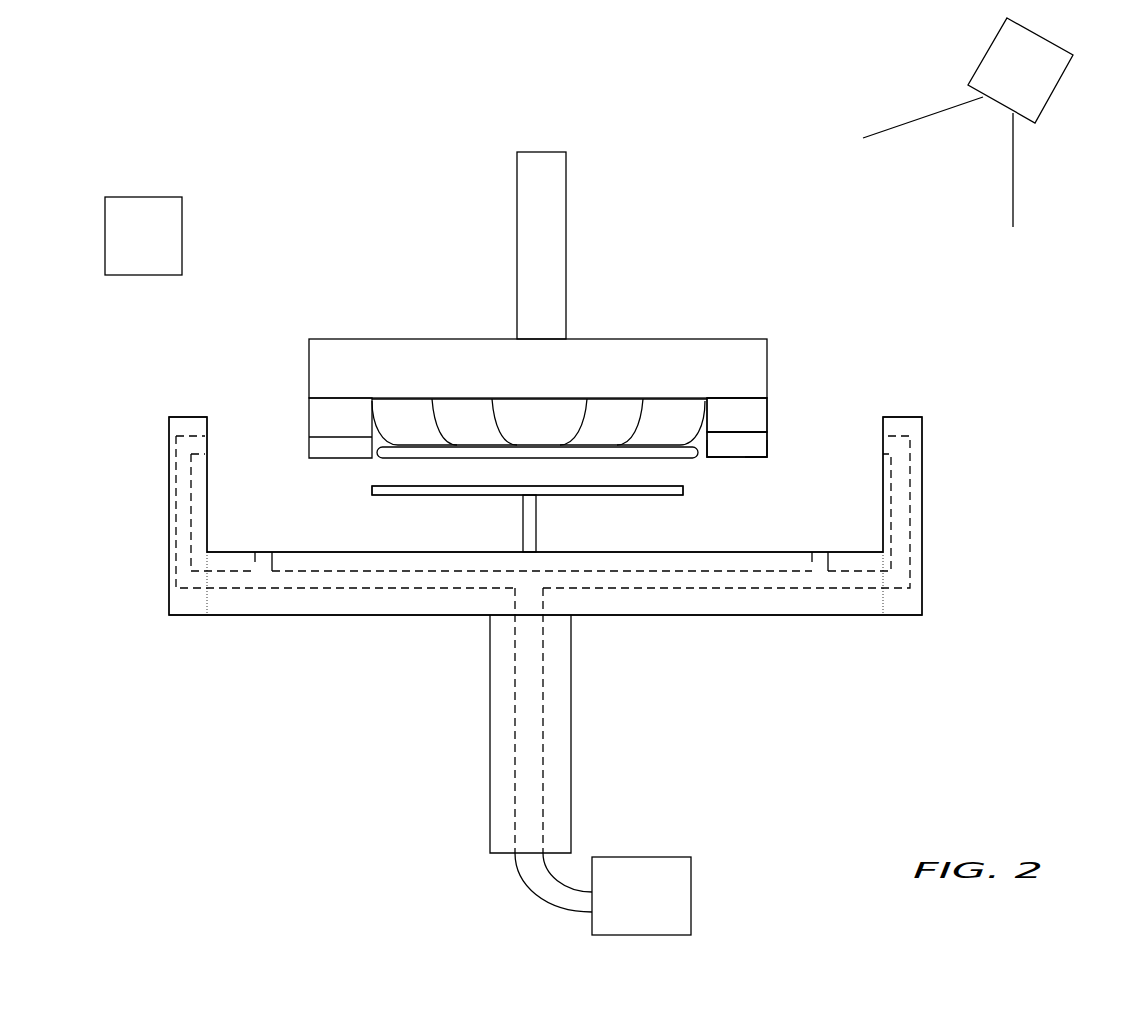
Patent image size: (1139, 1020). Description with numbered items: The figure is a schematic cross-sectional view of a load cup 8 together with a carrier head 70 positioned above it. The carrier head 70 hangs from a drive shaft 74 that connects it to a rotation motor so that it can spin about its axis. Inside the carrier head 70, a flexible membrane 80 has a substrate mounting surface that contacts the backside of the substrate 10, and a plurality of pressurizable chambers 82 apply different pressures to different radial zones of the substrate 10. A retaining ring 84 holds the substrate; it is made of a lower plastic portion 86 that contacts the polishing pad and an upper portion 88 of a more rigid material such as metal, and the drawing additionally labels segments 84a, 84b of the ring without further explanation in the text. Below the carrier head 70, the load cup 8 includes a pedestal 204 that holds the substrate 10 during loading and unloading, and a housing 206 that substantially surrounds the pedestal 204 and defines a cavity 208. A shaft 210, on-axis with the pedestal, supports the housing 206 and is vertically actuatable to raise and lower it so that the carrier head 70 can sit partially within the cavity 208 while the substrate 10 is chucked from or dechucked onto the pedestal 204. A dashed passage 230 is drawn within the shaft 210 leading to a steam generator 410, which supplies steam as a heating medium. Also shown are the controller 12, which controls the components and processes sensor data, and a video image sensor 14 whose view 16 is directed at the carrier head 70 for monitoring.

The load cup 8 is at (962, 410).
The substrate 10 is at (410, 452).
The controller 12 is at (143, 236).
The video image sensor 14 is at (968, 78).
The view 16 is at (1015, 180).
The carrier head 70 is at (785, 342).
The drive shaft 74 is at (535, 235).
The flexible membrane 80 is at (618, 443).
The pressurizable chambers 82 is at (539, 414).
The retaining ring 84 is at (863, 338).
The lower head right segment 84a is at (768, 450).
The lower head left segment 84b is at (725, 458).
The lower plastic portion 86 is at (762, 442).
The upper portion 88 is at (755, 412).
The pedestal 204 is at (656, 498).
The housing 206 is at (922, 554).
The cavity 208 is at (500, 517).
The shaft 210 is at (571, 765).
The fluid channel 230 is at (528, 758).
The steam generator 410 is at (641, 896).